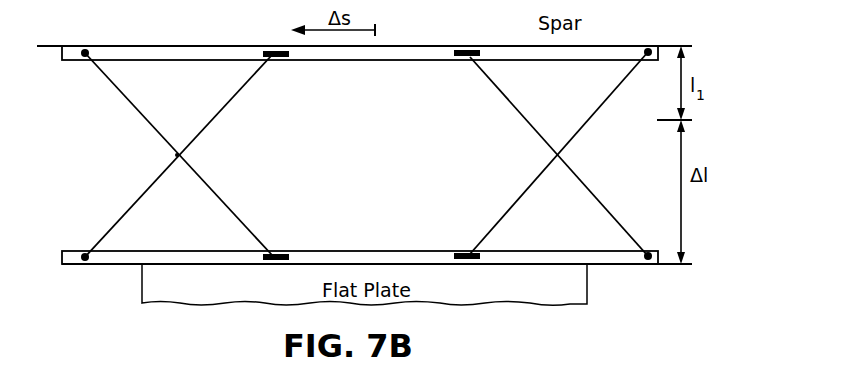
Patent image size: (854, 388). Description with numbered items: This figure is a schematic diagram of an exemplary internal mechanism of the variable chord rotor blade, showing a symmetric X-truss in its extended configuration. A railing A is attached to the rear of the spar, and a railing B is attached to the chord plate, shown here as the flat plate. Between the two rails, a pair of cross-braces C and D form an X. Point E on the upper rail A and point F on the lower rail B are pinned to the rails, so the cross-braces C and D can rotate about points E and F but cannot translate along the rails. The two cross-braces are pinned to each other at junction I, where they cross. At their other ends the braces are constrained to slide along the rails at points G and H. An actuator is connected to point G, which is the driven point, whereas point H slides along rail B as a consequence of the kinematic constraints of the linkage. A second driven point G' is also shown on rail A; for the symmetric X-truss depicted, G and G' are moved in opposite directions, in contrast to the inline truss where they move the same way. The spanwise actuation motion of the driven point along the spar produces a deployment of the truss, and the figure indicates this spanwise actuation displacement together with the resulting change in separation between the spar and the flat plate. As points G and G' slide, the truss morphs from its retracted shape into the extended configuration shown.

The railing A is at (364, 59).
The railing B is at (367, 267).
The cross-brace C is at (366, 156).
The cross-brace D is at (366, 153).
The pinned point E is at (79, 67).
The pinned point F is at (79, 244).
The driven point G is at (277, 67).
The driven point G' is at (464, 67).
The sliding point H is at (276, 244).
The junction I is at (179, 136).